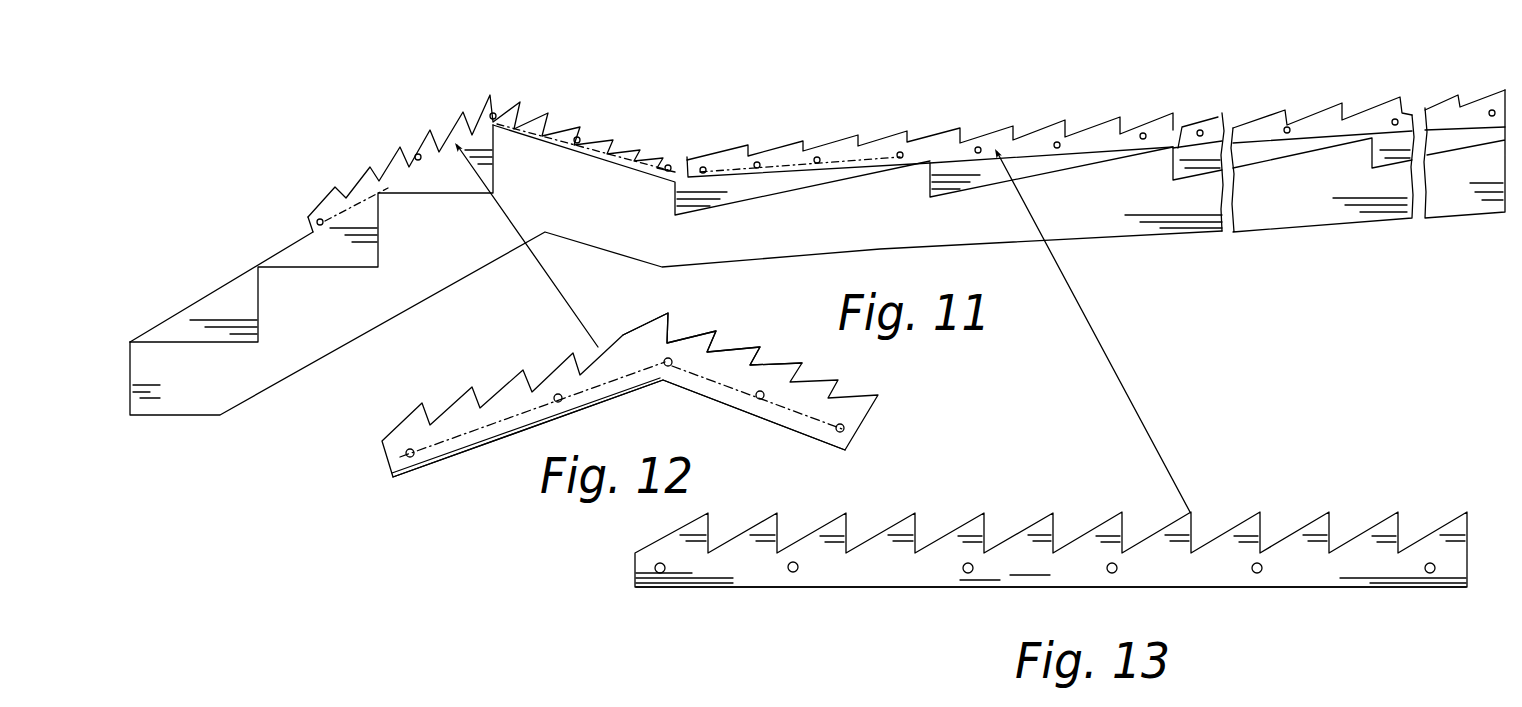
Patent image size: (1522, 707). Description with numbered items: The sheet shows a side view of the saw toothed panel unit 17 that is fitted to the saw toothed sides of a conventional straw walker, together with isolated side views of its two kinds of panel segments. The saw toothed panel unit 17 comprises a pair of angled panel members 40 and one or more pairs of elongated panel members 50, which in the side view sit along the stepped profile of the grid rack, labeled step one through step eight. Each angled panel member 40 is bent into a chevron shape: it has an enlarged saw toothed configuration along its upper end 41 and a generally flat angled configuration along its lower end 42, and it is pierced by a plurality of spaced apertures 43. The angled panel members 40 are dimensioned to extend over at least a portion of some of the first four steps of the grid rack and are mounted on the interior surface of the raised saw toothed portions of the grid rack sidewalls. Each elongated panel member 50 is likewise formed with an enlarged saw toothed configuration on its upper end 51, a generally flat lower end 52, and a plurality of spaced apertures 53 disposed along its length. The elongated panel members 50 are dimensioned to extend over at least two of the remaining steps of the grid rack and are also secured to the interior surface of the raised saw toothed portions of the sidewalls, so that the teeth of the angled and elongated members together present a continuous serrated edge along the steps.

In FIG. 11, the saw toothed panel unit 17 is at (856, 76).
In FIG. 11, the angled panel member 40 is at (481, 104).
In FIG. 12, the angled panel member 40 is at (528, 350).
In FIG. 12, the upper end of angled panel member 41 is at (719, 331).
In FIG. 12, the lower end of angled panel member 42 is at (493, 441).
In FIG. 12, the spaced apertures 43 is at (760, 400).
In FIG. 11, the elongated panel member 50 is at (1012, 122).
In FIG. 13, the elongated panel member 50 is at (1236, 508).
In FIG. 13, the upper end of elongated panel member 51 is at (914, 513).
In FIG. 13, the lower end of elongated panel member 52 is at (815, 588).
In FIG. 13, the spaced apertures 53 is at (1256, 574).